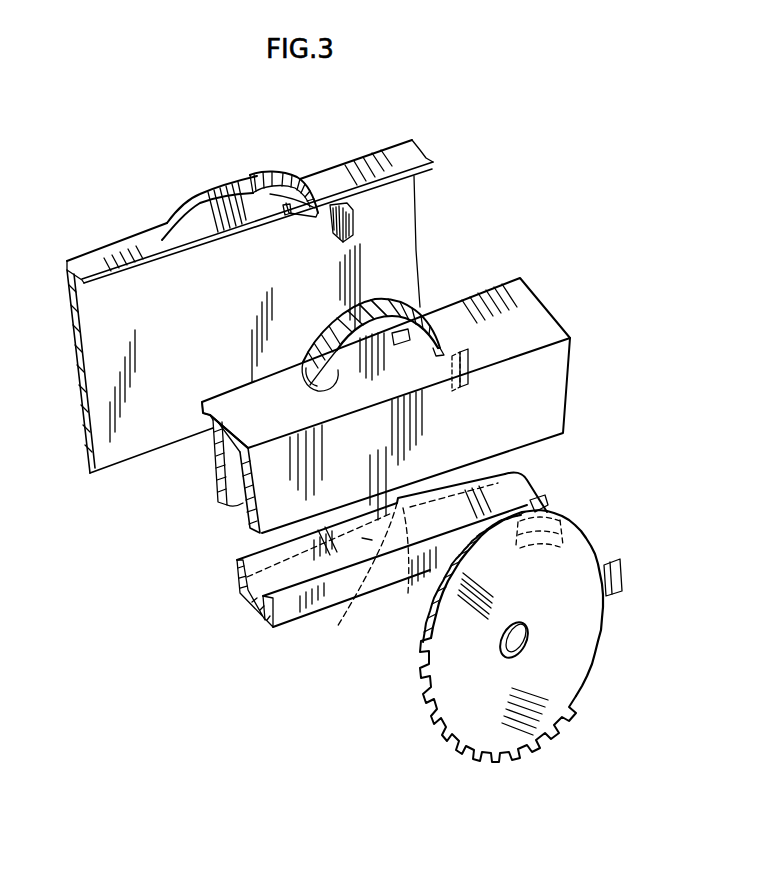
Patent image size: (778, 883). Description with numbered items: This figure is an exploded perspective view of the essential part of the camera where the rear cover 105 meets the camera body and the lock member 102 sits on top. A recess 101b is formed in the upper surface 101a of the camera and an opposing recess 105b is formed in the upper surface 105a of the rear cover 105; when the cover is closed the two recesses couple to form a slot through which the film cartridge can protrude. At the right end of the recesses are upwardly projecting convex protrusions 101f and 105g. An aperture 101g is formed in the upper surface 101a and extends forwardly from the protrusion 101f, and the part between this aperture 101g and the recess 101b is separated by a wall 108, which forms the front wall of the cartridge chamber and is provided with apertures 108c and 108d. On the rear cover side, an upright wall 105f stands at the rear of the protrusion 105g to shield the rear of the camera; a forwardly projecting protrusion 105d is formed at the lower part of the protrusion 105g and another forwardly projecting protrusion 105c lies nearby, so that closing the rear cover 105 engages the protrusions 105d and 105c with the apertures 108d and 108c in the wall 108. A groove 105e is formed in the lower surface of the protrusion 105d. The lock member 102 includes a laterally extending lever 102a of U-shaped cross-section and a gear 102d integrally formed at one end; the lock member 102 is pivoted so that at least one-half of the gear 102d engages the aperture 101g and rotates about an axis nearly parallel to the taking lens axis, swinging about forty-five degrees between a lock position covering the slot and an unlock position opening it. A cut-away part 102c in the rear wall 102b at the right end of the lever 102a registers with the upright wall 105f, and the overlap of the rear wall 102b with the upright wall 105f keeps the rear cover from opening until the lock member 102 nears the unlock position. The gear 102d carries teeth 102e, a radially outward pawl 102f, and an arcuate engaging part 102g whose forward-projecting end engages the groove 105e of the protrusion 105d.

The rear cover 105 is at (112, 245).
The upper surface of rear cover 105a is at (363, 158).
The recess 105b is at (143, 257).
The protrusion 105c is at (352, 228).
The protrusion 105d is at (304, 220).
The groove 105e is at (287, 213).
The upright wall 105f is at (217, 197).
The convex protrusion 105g is at (256, 178).
The upper surface of camera 101a is at (502, 303).
The recess 101b is at (208, 396).
The convex protrusion 101f is at (367, 301).
The aperture 101g is at (443, 340).
The wall 108 is at (356, 374).
The aperture 108c is at (468, 390).
The aperture 108d is at (402, 345).
The lock member 102 is at (540, 473).
The lever 102a is at (293, 593).
The rear wall 102b is at (373, 582).
The cut-away part 102c is at (370, 537).
The gear 102d is at (587, 622).
The teeth 102e is at (490, 761).
The pawl 102f is at (617, 583).
The arcuate engaging part 102g is at (548, 494).